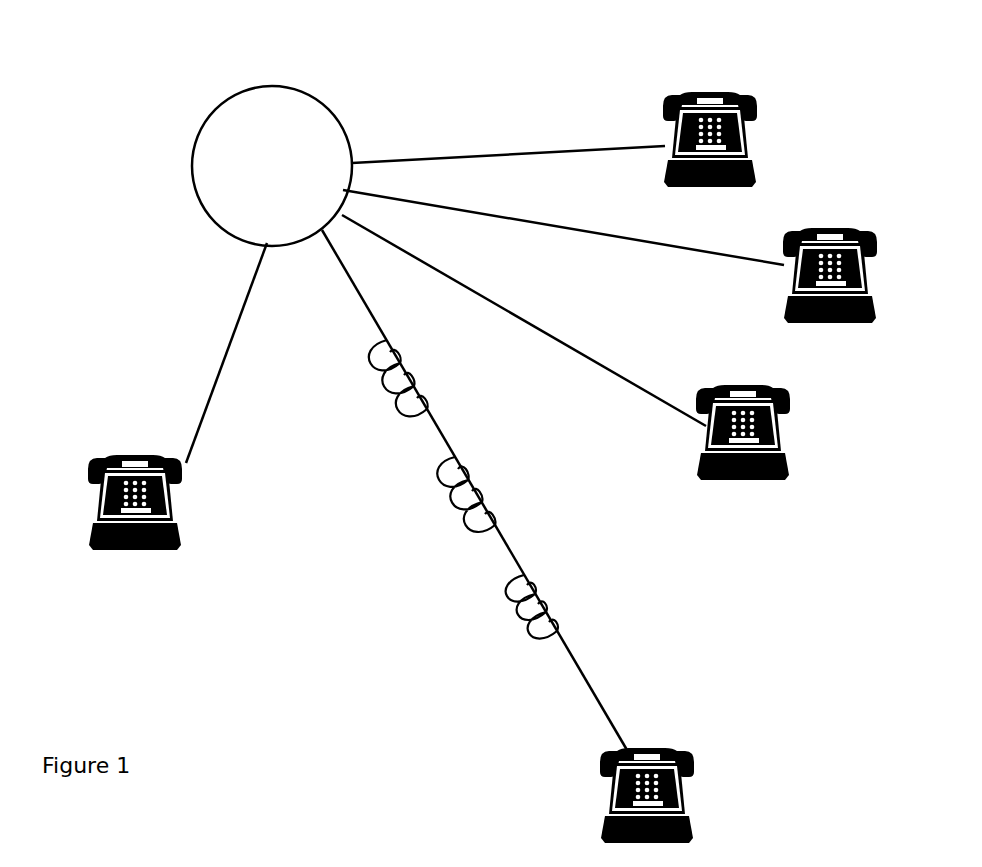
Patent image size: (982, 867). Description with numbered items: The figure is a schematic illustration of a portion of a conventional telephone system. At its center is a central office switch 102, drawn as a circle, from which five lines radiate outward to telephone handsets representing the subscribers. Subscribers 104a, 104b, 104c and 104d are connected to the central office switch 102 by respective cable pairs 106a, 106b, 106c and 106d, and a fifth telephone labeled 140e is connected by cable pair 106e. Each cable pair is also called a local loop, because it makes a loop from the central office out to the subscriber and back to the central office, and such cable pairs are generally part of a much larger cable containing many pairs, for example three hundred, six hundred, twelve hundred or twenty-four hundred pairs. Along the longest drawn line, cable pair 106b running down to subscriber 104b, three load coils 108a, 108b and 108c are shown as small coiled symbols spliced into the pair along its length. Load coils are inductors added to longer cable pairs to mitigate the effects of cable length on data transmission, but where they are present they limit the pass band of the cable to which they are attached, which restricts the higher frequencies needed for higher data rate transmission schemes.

The central office switch 102 is at (279, 93).
The subscriber 104a is at (87, 508).
The subscriber 104b is at (695, 802).
The subscriber 104c is at (797, 450).
The subscriber 104d is at (882, 290).
The telephone 140e is at (763, 152).
The cable pair 106a is at (212, 378).
The cable pair 106b is at (605, 711).
The cable pair 106c is at (589, 356).
The cable pair 106d is at (740, 257).
The cable pair 106e is at (517, 153).
The load coil 108a is at (377, 410).
The load coil 108b is at (445, 512).
The load coil 108c is at (505, 620).